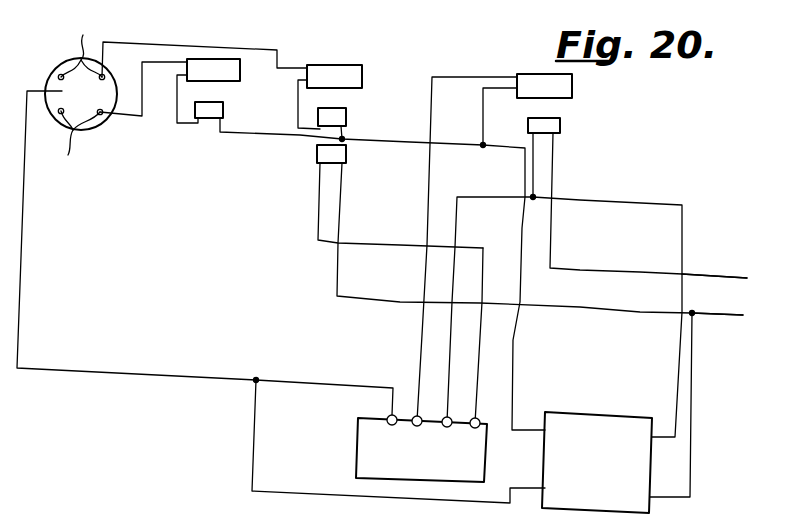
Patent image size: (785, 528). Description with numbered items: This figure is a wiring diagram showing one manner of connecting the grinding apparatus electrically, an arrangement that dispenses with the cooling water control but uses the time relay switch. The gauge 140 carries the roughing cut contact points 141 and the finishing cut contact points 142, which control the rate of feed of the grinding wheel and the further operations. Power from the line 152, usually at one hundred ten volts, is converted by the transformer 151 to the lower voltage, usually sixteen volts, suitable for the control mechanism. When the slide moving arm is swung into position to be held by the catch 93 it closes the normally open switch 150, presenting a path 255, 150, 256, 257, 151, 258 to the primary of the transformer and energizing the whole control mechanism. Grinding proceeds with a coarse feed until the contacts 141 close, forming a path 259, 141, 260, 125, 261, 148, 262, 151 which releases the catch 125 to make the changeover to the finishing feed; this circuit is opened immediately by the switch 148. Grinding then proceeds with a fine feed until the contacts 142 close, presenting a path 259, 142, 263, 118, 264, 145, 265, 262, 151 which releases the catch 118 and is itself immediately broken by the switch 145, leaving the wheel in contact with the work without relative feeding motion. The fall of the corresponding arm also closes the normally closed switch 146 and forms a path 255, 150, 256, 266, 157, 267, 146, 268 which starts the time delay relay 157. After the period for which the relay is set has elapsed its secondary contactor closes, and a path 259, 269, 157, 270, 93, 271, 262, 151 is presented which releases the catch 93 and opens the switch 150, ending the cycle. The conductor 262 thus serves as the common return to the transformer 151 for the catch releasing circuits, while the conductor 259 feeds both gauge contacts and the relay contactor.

The catch 93 is at (572, 86).
The catch 118 is at (362, 75).
The catch 125 is at (232, 73).
The gauge 140 is at (62, 60).
The roughing cut contact points 141 is at (88, 147).
The finishing cut contact points 142 is at (93, 37).
The toggle switch 145 is at (346, 115).
The toggle switch 146 is at (346, 153).
The toggle switch 148 is at (223, 110).
The switch 150 is at (560, 127).
The transformer 151 is at (605, 500).
The line 152 is at (737, 307).
The time delay relay 157 is at (421, 448).
The path 255 is at (557, 155).
The path 256 is at (534, 177).
The path 257 is at (666, 192).
The path 258 is at (688, 422).
The path 259 is at (23, 262).
The path 260 is at (131, 116).
The path 261 is at (178, 126).
The path 262 is at (252, 138).
The path 263 is at (150, 43).
The path 264 is at (298, 95).
The path 265 is at (345, 133).
The path 266 is at (513, 186).
The path 267 is at (478, 372).
The path 268 is at (340, 215).
The path 269 is at (352, 372).
The path 270 is at (421, 336).
The path 271 is at (483, 112).